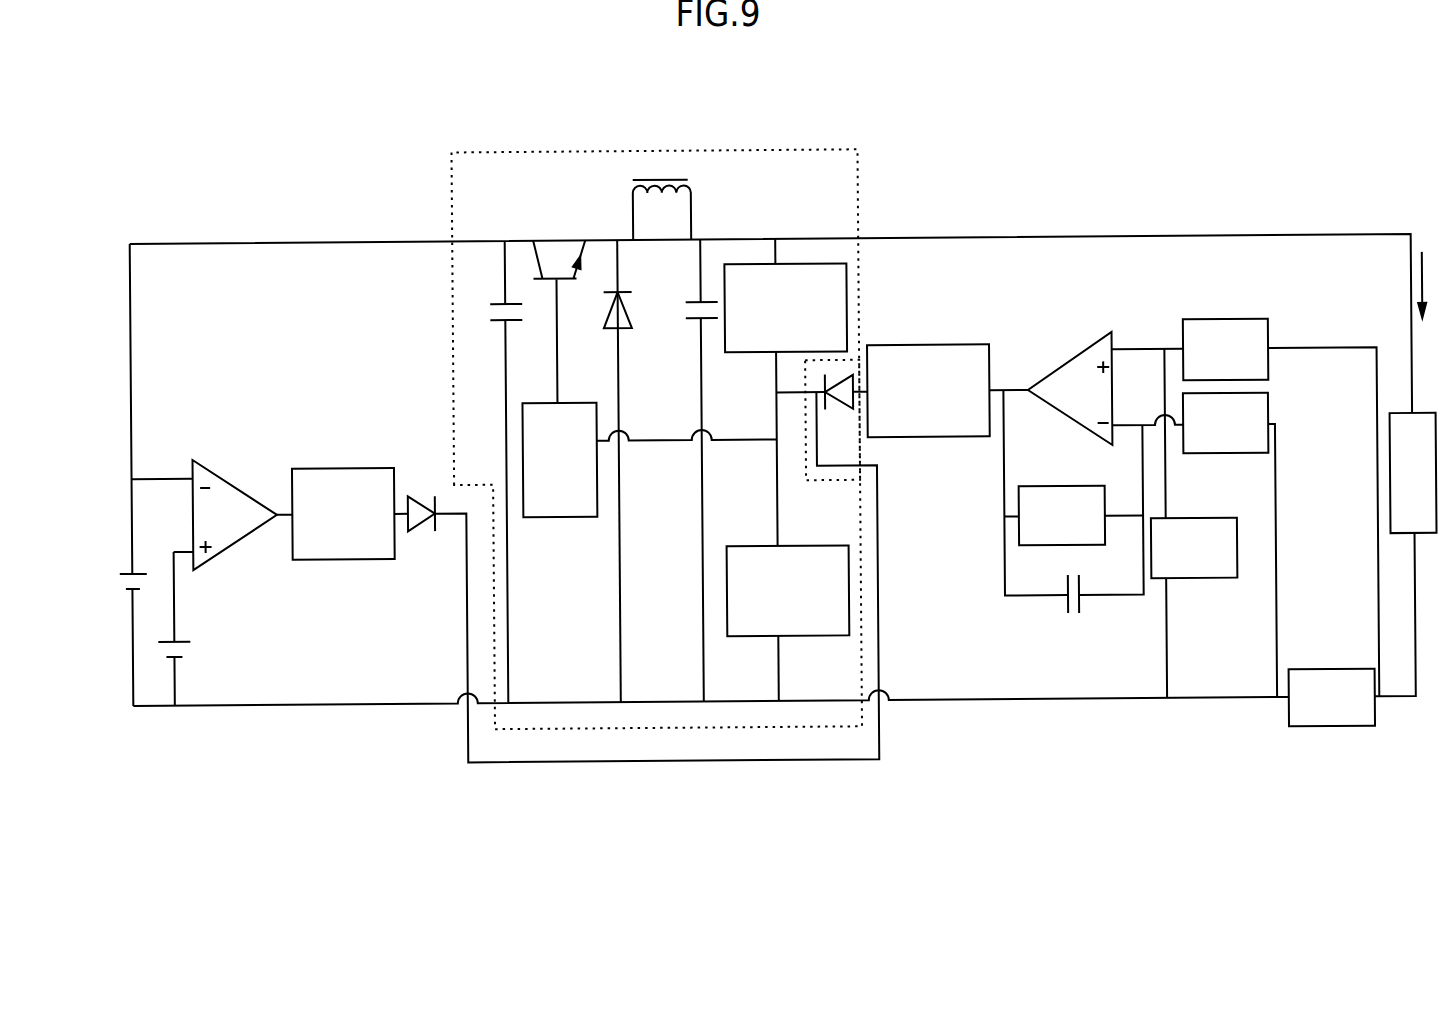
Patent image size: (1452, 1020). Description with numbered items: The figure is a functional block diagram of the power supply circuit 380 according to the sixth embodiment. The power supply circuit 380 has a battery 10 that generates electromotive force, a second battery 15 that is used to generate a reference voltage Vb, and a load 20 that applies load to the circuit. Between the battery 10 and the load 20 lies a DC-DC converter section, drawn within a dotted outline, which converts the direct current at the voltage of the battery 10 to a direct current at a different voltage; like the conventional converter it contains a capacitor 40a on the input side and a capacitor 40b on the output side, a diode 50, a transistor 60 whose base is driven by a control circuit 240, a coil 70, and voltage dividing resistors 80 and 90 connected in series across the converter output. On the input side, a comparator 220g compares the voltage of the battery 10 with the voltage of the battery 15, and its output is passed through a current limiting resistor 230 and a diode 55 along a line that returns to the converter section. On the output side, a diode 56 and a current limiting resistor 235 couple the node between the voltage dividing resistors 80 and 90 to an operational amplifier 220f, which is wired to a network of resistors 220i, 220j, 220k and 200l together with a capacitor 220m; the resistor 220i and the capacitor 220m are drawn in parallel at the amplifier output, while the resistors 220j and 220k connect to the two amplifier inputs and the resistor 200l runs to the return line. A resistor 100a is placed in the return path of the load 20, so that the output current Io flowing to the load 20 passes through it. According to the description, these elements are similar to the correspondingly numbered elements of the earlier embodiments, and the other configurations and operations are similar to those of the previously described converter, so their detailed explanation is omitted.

The power supply circuit 380 is at (262, 172).
The battery 10 is at (141, 568).
The battery 15 is at (180, 637).
The comparator 220g is at (233, 480).
The current limiting resistor 230 is at (348, 464).
The diode 55 is at (418, 493).
The capacitor 40a is at (499, 301).
The transistor 60 is at (584, 241).
The coil 70 is at (697, 199).
The diode 50 is at (626, 319).
The capacitor 40b is at (693, 299).
The control circuit 240 is at (570, 401).
The voltage dividing resistor 80 is at (849, 310).
The voltage dividing resistor 90 is at (801, 545).
The diode 56 is at (854, 404).
The current limiting resistor 235 is at (951, 346).
The operational amplifier 220f is at (1074, 357).
The resistor 220j is at (1269, 331).
The resistor 220k is at (1268, 414).
The resistor 220i is at (1078, 484).
The capacitor 220m is at (1079, 607).
The resistor 200l is at (1220, 520).
The resistor 100a is at (1316, 673).
The load 20 is at (1405, 418).